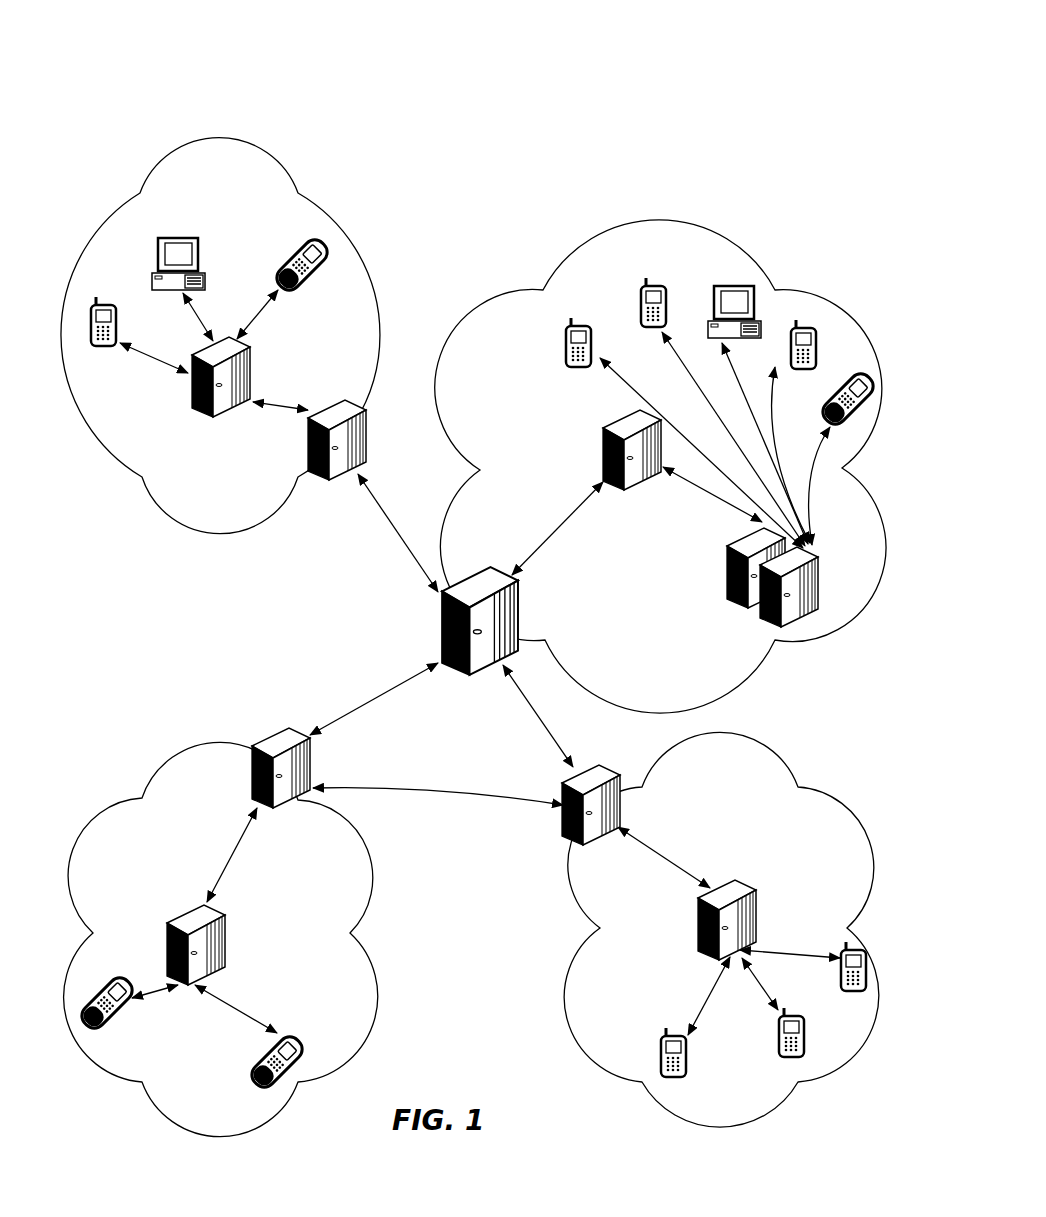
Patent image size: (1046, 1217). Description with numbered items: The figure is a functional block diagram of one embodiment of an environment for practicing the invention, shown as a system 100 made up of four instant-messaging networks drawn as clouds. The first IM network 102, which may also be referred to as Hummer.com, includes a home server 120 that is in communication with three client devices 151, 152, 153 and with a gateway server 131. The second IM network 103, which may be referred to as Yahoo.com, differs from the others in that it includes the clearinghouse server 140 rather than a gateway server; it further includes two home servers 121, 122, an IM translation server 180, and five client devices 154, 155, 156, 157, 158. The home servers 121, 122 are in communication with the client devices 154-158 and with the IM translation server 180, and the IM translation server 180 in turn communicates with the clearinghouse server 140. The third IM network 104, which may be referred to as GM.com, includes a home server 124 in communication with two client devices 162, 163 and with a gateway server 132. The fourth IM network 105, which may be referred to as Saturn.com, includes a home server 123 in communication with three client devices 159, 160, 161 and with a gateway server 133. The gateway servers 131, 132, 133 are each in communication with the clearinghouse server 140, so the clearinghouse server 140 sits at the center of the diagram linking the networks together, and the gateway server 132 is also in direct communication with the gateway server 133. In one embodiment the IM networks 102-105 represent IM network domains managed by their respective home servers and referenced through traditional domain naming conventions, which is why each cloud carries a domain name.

The system 100 is at (608, 70).
The IM network 102 is at (221, 138).
The IM network 103 is at (657, 220).
The IM network 104 is at (378, 979).
The IM network 105 is at (538, 973).
The home server 120 is at (248, 357).
The home server 121 is at (727, 590).
The home server 122 is at (770, 630).
The home server 123 is at (698, 933).
The home server 124 is at (223, 900).
The gateway server 131 is at (308, 450).
The gateway server 132 is at (310, 748).
The gateway server 133 is at (603, 743).
The clearinghouse server 140 is at (443, 618).
The client device 151 is at (118, 296).
The client device 152 is at (158, 256).
The client device 153 is at (318, 275).
The client device 154 is at (565, 353).
The client device 155 is at (640, 313).
The client device 156 is at (715, 303).
The client device 157 is at (790, 352).
The client device 158 is at (818, 368).
The client device 159 is at (662, 1050).
The client device 160 is at (778, 1050).
The client device 161 is at (845, 990).
The client device 162 is at (120, 960).
The client device 163 is at (298, 1020).
The IM translation server 180 is at (604, 432).